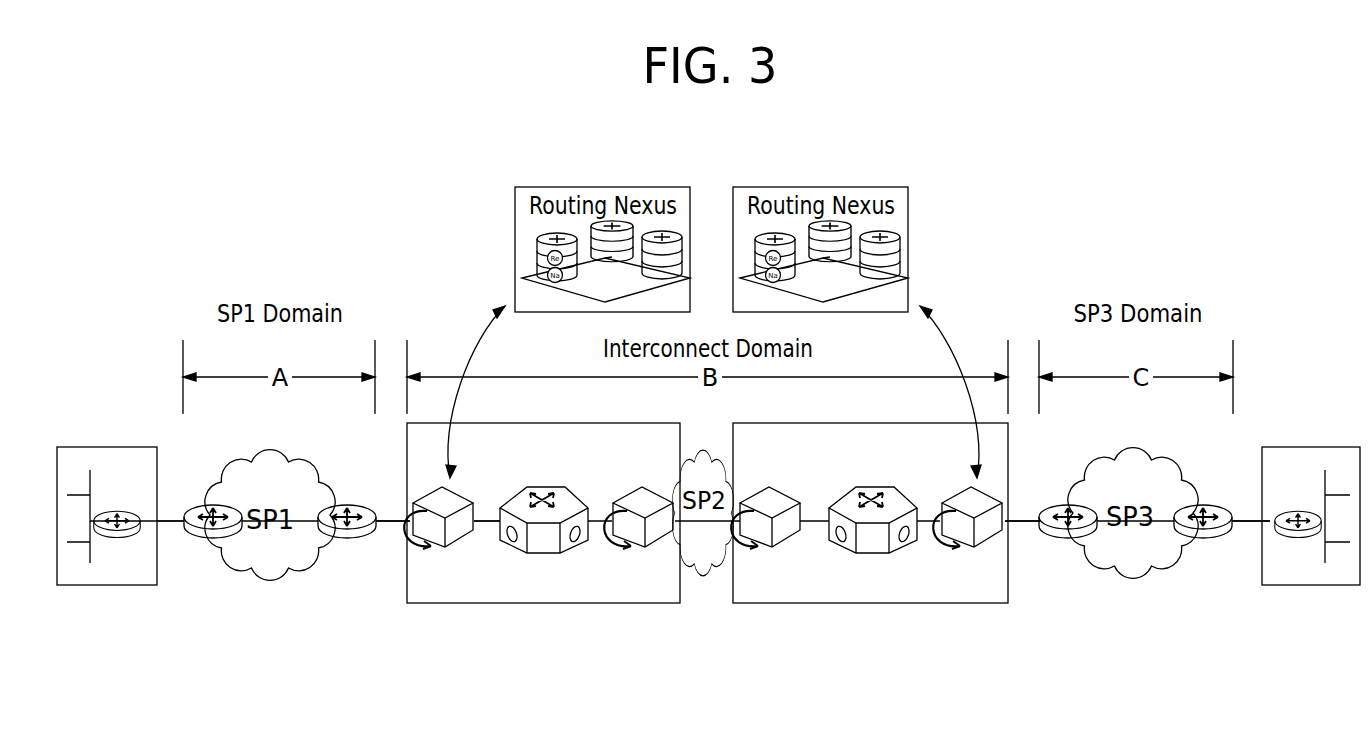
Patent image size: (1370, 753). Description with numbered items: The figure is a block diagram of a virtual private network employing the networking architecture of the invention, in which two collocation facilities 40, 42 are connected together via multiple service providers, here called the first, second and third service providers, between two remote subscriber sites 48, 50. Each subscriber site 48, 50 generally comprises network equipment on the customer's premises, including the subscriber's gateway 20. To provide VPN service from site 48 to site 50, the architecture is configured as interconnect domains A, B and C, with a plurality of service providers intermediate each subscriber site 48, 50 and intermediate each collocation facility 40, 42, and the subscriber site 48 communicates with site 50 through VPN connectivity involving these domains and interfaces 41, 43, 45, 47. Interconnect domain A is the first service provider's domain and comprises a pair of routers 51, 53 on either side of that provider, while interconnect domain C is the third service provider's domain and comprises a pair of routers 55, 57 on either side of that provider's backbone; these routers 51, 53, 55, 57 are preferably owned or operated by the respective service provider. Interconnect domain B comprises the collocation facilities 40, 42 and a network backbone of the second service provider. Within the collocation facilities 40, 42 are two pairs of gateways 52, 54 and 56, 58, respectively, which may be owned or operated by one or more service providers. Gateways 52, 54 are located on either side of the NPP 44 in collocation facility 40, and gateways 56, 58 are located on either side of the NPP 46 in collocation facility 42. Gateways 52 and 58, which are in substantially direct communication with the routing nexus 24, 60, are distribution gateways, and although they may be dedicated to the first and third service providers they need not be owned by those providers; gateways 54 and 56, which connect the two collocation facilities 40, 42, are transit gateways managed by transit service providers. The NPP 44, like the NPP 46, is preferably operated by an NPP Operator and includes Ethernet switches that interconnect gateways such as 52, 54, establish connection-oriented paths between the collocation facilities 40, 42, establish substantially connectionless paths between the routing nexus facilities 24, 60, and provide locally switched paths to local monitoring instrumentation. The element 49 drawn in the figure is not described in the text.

The routing nexus 24 is at (515, 220).
The routing nexus 60 is at (908, 220).
The subscriber site 48 is at (83, 447).
The subscriber's gateway 20 is at (117, 532).
The interface 41 is at (166, 523).
The router 51 is at (195, 532).
The router 53 is at (347, 540).
The interface 43 is at (388, 525).
The collocation facility 40 is at (600, 603).
The distribution gateway 52 is at (450, 547).
The link 49 is at (487, 522).
The NPP 44 is at (543, 554).
The transit gateway 54 is at (657, 547).
The collocation facility 42 is at (830, 603).
The transit gateway 56 is at (778, 547).
The NPP 46 is at (870, 554).
The distribution gateway 58 is at (977, 547).
The interface 45 is at (1022, 523).
The router 55 is at (1058, 540).
The router 57 is at (1208, 533).
The interface 47 is at (1247, 523).
The subscriber site 50 is at (1310, 447).